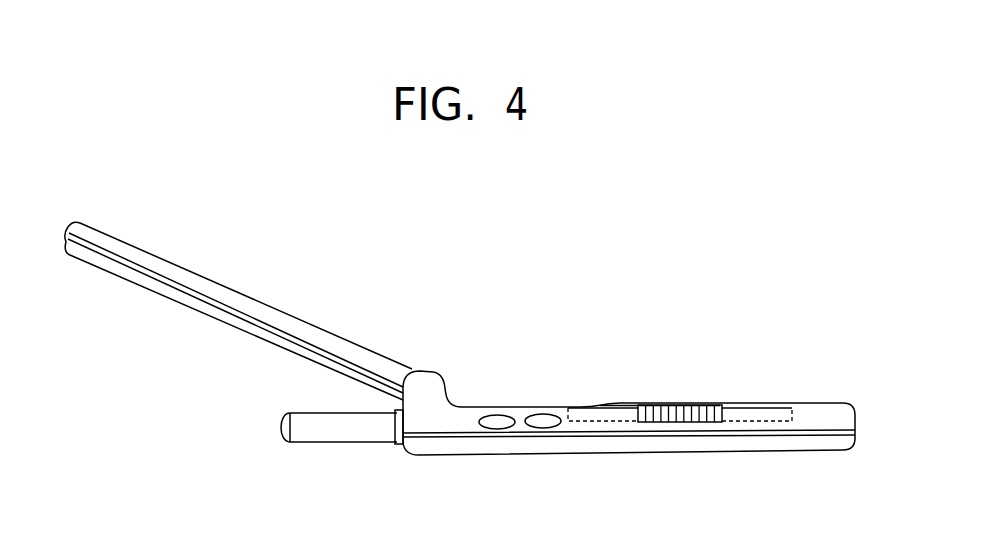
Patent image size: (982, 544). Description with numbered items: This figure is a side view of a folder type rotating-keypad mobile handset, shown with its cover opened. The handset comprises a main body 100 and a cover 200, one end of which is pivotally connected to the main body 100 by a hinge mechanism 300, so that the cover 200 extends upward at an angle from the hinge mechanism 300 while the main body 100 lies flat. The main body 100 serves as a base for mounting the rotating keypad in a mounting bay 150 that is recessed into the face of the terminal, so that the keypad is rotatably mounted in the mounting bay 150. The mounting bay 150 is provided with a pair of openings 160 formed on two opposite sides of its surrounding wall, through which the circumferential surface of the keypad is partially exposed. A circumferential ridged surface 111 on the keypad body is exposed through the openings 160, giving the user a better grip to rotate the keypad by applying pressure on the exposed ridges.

The main body 100 is at (812, 412).
The circumferential ridged surface 111 is at (668, 421).
The mounting bay 150 is at (582, 422).
The openings 160 is at (723, 422).
The cover 200 is at (215, 283).
The hinge mechanism 300 is at (433, 377).